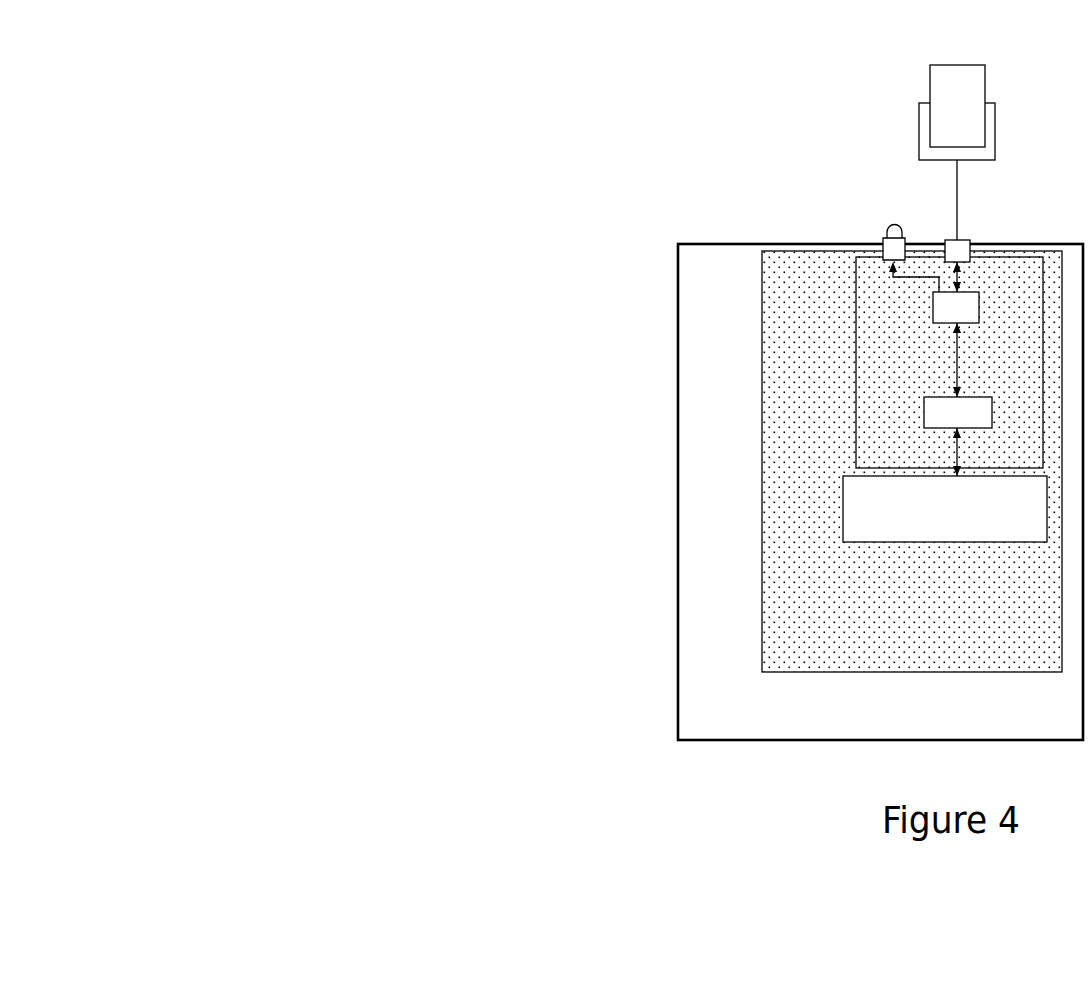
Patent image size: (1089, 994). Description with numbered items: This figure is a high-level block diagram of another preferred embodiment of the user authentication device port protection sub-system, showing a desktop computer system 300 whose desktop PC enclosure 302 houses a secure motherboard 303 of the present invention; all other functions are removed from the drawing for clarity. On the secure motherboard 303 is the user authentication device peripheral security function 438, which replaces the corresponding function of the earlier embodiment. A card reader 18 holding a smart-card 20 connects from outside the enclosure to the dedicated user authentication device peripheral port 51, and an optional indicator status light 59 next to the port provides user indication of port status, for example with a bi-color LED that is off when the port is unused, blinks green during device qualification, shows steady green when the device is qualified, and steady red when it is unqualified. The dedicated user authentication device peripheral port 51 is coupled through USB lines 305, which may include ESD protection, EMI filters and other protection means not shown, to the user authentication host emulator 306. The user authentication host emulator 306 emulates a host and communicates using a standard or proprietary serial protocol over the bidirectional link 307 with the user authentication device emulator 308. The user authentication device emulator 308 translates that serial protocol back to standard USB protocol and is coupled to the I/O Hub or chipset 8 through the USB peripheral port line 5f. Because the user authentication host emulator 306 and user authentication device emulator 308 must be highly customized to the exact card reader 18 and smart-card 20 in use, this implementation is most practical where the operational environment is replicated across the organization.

The desktop computer system 300 is at (488, 81).
The desktop PC enclosure 302 is at (752, 243).
The secure motherboard 303 is at (761, 416).
The user authentication device peripheral security function 438 is at (856, 344).
The USB lines 305 is at (960, 282).
The user authentication host emulator 306 is at (933, 311).
The bidirectional link 307 is at (957, 355).
The user authentication device emulator 308 is at (925, 415).
The USB peripheral port line 5f is at (960, 448).
The I/O Hub or chipset 8 is at (843, 516).
The indicator status light 59 is at (887, 228).
The dedicated user authentication device peripheral port 51 is at (964, 240).
The card reader 18 is at (919, 112).
The smart-card 20 is at (930, 87).